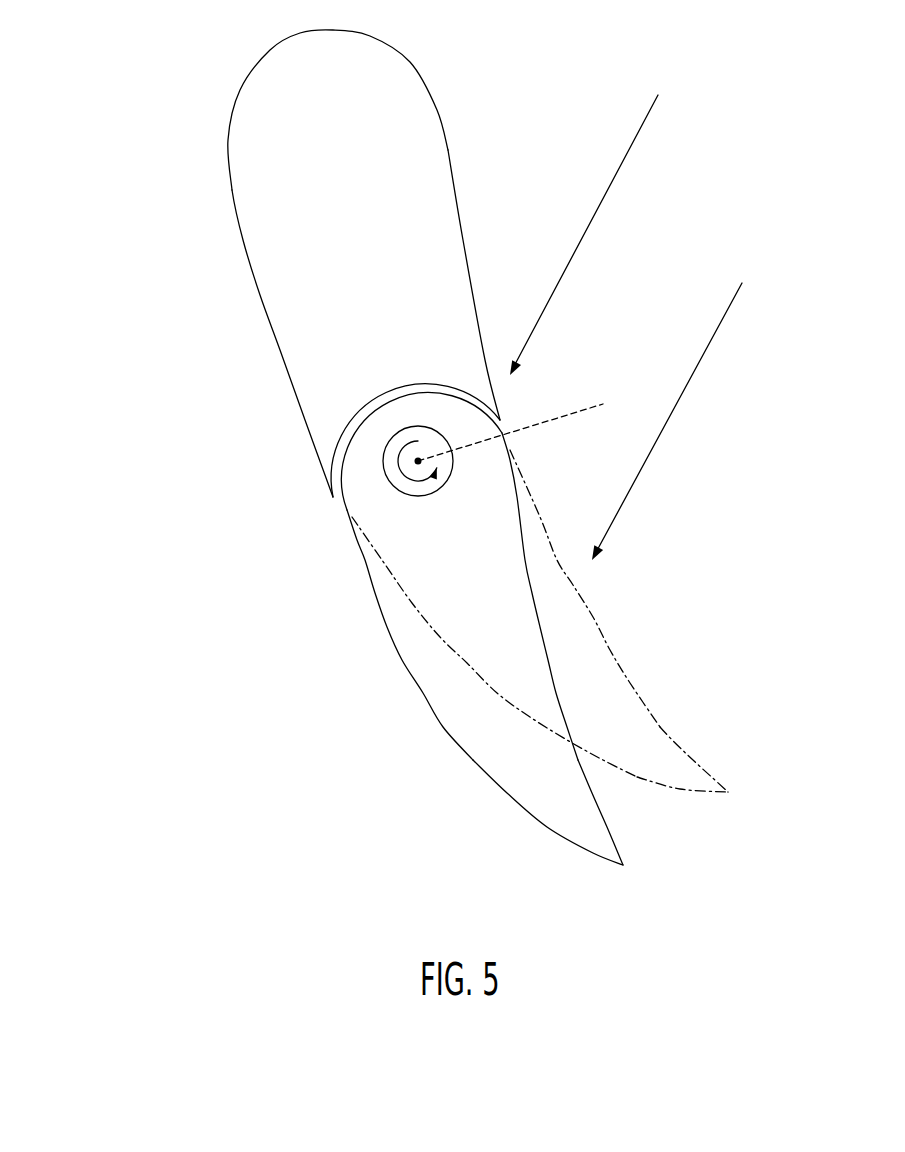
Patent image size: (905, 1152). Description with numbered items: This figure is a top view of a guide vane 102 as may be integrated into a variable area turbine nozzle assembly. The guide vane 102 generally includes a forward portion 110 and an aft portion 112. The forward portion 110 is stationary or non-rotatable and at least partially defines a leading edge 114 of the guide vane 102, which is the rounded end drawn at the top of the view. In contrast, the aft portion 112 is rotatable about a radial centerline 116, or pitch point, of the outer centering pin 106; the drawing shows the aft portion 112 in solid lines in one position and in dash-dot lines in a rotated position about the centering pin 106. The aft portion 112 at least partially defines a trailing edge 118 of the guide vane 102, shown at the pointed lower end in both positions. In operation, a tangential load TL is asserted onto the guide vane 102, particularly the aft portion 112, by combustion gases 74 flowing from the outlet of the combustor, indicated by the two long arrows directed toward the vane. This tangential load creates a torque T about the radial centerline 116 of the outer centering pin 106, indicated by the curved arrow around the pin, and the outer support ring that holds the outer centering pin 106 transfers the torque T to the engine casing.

The guide vane 102 is at (210, 287).
The outer centering pin 106 is at (390, 483).
The forward portion 110 is at (366, 254).
The aft portion 112 is at (484, 749).
The leading edge 114 is at (292, 30).
The radial centerline 116 is at (530, 421).
The trailing edge 118 is at (612, 874).
The torque T is at (417, 482).
The combustion gases 74 is at (593, 217).